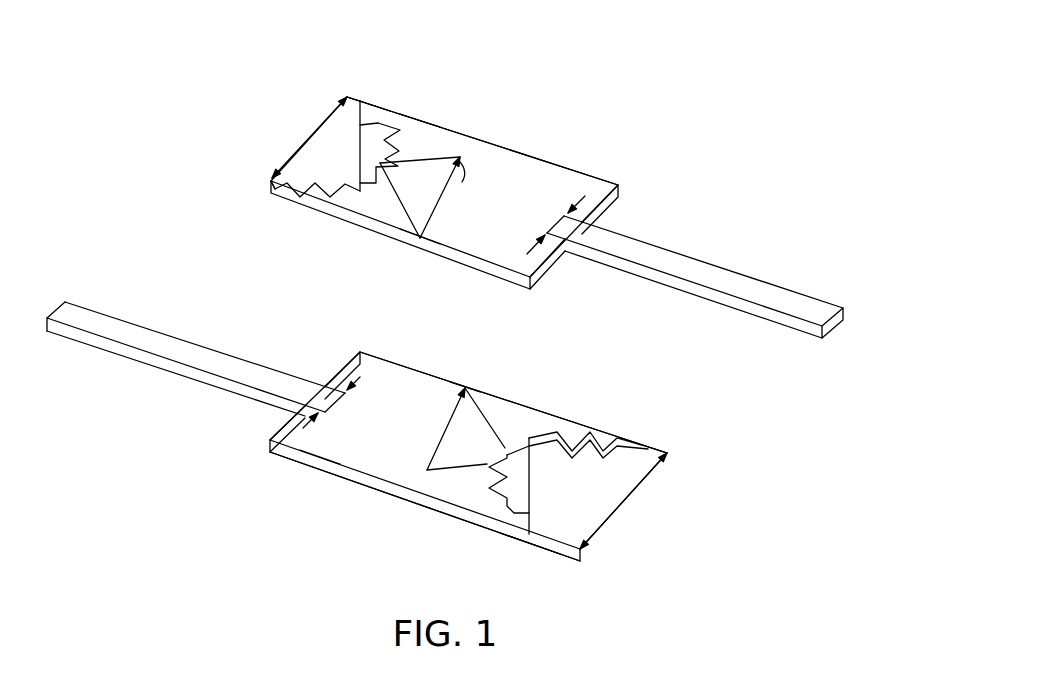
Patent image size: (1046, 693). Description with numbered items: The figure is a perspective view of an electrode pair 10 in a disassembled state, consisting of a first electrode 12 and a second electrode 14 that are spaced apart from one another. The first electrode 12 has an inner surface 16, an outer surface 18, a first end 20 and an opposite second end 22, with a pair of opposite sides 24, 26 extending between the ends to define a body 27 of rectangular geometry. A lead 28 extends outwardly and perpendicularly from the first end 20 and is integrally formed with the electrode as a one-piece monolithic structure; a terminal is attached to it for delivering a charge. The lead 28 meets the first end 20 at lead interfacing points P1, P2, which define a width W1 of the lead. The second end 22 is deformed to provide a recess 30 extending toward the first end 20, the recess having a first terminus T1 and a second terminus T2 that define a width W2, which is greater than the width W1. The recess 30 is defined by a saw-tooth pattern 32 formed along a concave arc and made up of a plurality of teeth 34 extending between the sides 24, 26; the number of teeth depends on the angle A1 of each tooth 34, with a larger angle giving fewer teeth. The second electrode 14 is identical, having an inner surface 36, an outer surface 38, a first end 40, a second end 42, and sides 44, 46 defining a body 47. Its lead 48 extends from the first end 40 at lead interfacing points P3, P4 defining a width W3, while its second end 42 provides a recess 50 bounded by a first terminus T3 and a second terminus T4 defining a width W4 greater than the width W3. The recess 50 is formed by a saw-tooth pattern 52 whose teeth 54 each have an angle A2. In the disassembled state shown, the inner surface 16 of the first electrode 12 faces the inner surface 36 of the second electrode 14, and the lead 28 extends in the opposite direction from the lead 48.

The electrode pair 10 is at (718, 97).
The first electrode 12 is at (307, 482).
The second electrode 14 is at (575, 170).
The inner surface 16 is at (383, 370).
The outer surface 18 is at (448, 509).
The first end 20 is at (288, 425).
The second end 22 is at (541, 452).
The side 24 is at (502, 394).
The side 26 is at (421, 499).
The body 27 is at (378, 465).
The lead 28 is at (118, 333).
The recess 30 is at (546, 541).
The saw-tooth pattern 32 is at (638, 447).
The teeth 34 is at (530, 451).
The inner surface 36 is at (468, 268).
The outer surface 38 is at (448, 139).
The first end 40 is at (543, 273).
The second end 42 is at (391, 143).
The side 44 is at (415, 119).
The side 46 is at (420, 247).
The body 47 is at (495, 170).
The lead 48 is at (787, 290).
The recess 50 is at (268, 182).
The saw-tooth pattern 52 is at (345, 99).
The teeth 54 is at (357, 184).
The first terminus T1 is at (530, 521).
The second terminus T2 is at (616, 438).
The first terminus T3 is at (353, 99).
The second terminus T4 is at (266, 181).
The width of the lead W1 is at (327, 405).
The width of the recess W2 is at (624, 500).
The width of the lead W3 is at (562, 225).
The width of the recess W4 is at (312, 134).
The lead interfacing point P1 is at (306, 401).
The lead interfacing point P2 is at (330, 387).
The lead interfacing point P3 is at (585, 220).
The lead interfacing point P4 is at (566, 240).
The angle of each tooth A1 is at (428, 466).
The angle of each tooth A2 is at (425, 232).